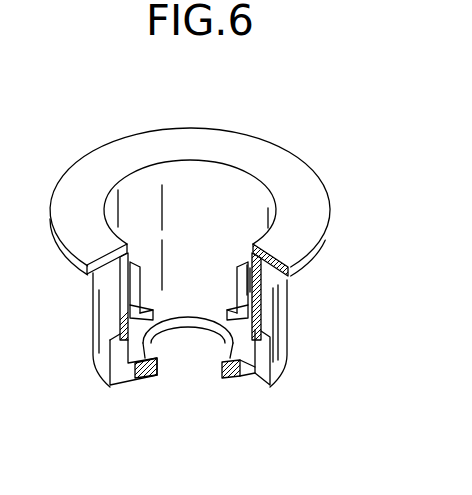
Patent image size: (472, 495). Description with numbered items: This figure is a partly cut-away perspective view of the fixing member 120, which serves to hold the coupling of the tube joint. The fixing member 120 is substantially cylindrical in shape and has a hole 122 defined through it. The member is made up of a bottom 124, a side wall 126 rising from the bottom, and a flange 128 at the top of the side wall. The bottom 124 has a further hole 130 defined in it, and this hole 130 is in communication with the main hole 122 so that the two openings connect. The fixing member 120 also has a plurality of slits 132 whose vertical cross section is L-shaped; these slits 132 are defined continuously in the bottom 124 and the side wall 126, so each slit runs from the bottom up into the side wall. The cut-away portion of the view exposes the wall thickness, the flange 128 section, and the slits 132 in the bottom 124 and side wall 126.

The fixing member 120 is at (296, 302).
The hole 122 is at (199, 178).
The bottom 124 is at (271, 380).
The side wall 126 is at (281, 327).
The flange 128 is at (287, 170).
The hole 130 is at (189, 357).
The slits 132 is at (238, 300).